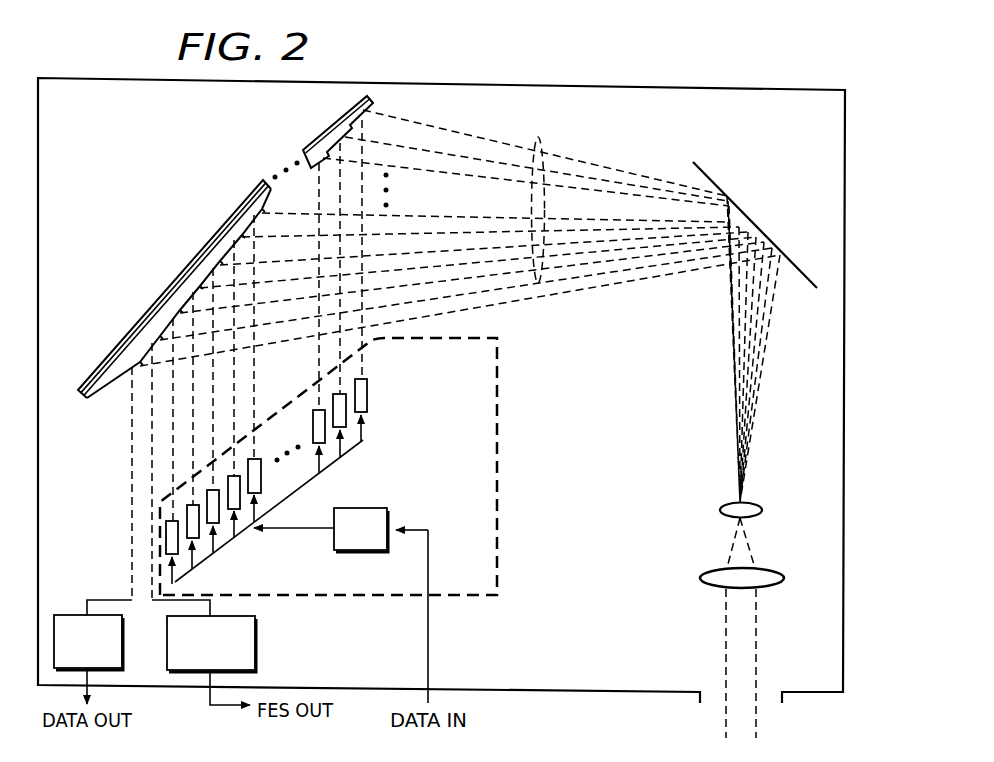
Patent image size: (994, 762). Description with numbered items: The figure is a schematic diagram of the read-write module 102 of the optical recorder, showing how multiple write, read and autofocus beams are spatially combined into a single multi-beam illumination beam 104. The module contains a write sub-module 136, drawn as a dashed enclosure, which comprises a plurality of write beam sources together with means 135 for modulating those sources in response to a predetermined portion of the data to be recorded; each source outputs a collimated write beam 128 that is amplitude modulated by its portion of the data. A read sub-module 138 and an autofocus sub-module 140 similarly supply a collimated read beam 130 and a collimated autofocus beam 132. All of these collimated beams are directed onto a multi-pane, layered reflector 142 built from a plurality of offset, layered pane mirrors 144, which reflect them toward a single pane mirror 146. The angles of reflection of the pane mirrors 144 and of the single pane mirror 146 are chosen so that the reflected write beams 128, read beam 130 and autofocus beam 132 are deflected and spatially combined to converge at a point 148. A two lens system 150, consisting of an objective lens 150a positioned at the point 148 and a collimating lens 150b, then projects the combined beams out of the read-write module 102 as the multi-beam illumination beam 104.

The read-write module 102 is at (110, 78).
The multi-beam illumination beam 104 is at (768, 684).
The collimated write beam 128 is at (539, 140).
The collimated read beam 130 is at (460, 306).
The collimated autofocus beam 132 is at (518, 296).
The means for modulating the sources 135 is at (389, 516).
The write sub-module 136 is at (498, 540).
The read sub-module 138 is at (78, 614).
The autofocus sub-module 140 is at (257, 645).
The multi-pane layered reflector 142 is at (227, 275).
The layered pane mirror 144 is at (208, 249).
The single pane mirror 146 is at (706, 172).
The point 148 is at (747, 485).
The two lens system 150 is at (721, 545).
The objective lens 150a is at (733, 503).
The collimating lens 150b is at (768, 588).